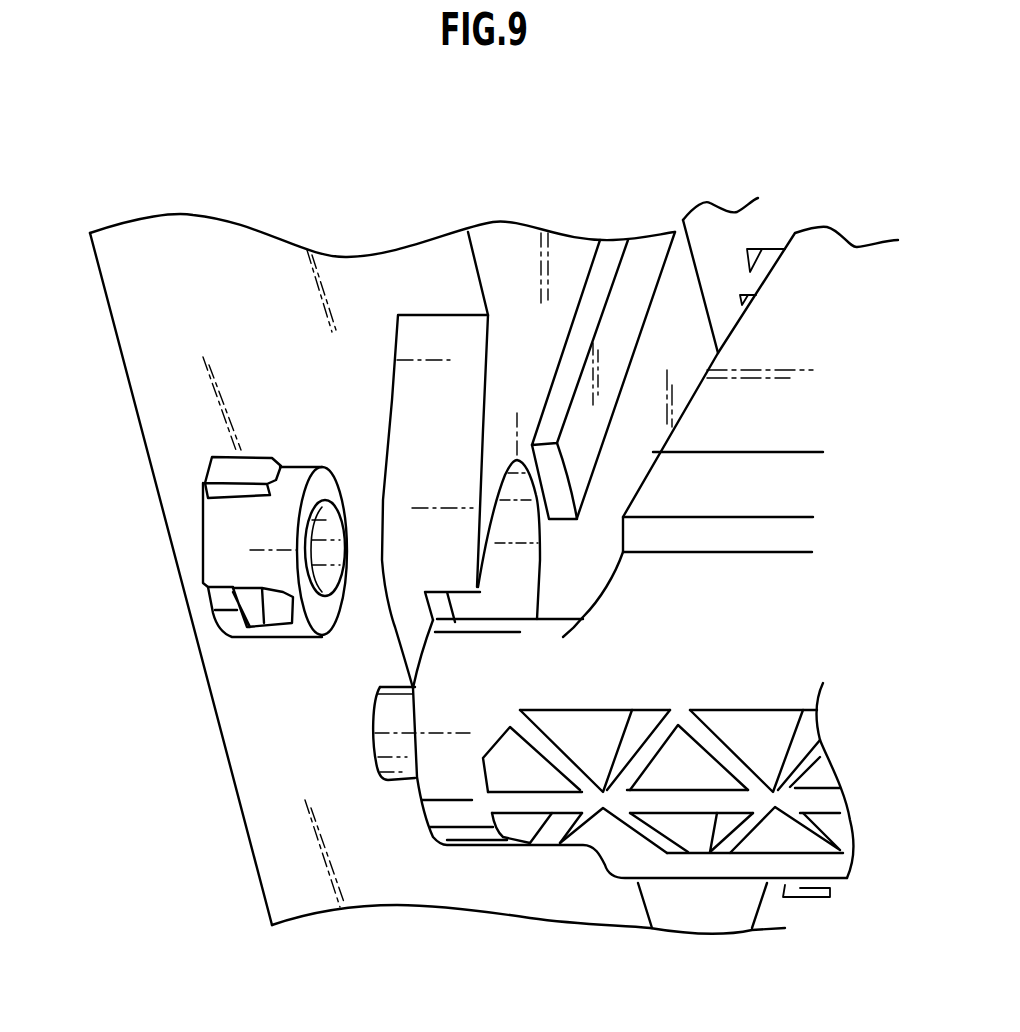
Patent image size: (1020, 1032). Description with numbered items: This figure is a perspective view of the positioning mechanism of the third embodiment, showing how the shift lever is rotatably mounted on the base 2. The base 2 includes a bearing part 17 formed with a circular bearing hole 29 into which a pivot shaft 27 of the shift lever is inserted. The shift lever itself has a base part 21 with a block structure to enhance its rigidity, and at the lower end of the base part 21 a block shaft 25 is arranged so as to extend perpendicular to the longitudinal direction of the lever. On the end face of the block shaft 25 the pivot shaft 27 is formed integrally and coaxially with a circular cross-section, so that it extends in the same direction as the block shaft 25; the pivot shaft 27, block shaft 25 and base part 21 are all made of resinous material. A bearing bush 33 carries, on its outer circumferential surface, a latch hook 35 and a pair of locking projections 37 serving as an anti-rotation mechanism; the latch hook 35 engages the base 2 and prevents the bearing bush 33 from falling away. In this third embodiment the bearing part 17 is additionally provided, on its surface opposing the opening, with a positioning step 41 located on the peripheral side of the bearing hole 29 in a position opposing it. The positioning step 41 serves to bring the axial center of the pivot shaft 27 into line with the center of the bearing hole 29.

The base 2 is at (138, 332).
The bearing part 17 is at (407, 395).
The base part 21 is at (780, 493).
The block shaft 25 is at (757, 697).
The pivot shaft 27 is at (383, 747).
The bearing hole 29 is at (500, 562).
The bearing bush 33 is at (212, 532).
The latch hook 35 is at (255, 620).
The locking projection 37 is at (222, 473).
The positioning step 41 is at (558, 505).